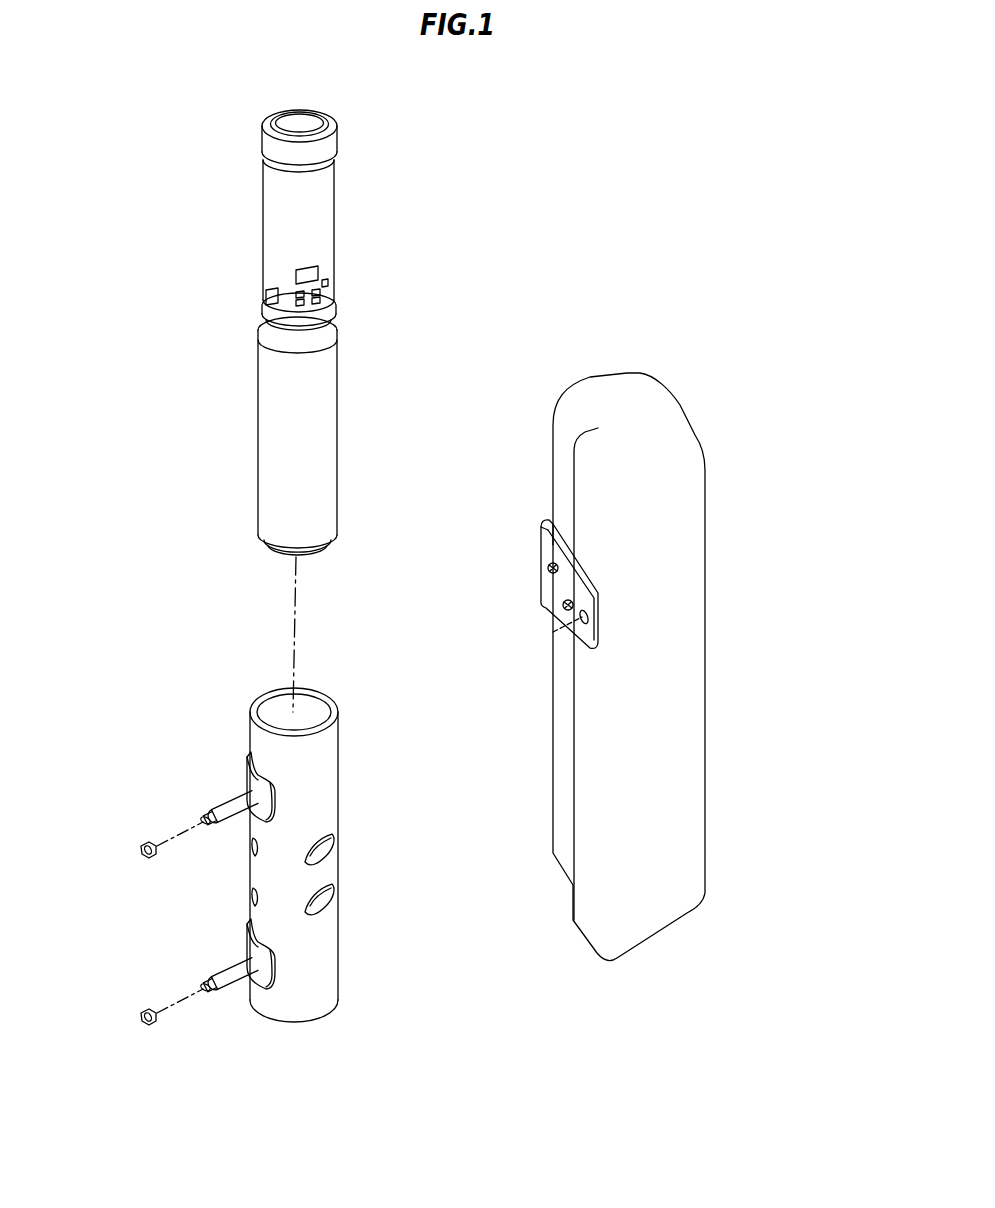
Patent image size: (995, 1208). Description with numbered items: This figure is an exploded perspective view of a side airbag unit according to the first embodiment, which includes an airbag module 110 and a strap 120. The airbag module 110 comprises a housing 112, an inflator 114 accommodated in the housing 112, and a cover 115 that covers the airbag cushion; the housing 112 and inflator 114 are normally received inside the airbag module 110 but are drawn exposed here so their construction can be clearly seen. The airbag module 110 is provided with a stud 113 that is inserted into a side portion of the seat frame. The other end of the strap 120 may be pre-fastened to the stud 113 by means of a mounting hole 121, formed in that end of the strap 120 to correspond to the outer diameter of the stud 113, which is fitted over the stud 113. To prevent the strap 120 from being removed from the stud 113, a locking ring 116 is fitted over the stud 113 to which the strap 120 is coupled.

The airbag module 110 is at (704, 667).
The housing 112 is at (332, 955).
The stud 113 is at (233, 796).
The inflator 114 is at (266, 413).
The cover 115 is at (690, 645).
The locking ring 116 is at (143, 842).
The strap 120 is at (500, 608).
The mounting hole 121 is at (552, 632).